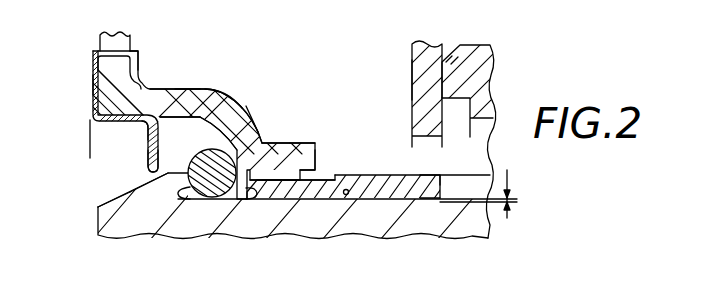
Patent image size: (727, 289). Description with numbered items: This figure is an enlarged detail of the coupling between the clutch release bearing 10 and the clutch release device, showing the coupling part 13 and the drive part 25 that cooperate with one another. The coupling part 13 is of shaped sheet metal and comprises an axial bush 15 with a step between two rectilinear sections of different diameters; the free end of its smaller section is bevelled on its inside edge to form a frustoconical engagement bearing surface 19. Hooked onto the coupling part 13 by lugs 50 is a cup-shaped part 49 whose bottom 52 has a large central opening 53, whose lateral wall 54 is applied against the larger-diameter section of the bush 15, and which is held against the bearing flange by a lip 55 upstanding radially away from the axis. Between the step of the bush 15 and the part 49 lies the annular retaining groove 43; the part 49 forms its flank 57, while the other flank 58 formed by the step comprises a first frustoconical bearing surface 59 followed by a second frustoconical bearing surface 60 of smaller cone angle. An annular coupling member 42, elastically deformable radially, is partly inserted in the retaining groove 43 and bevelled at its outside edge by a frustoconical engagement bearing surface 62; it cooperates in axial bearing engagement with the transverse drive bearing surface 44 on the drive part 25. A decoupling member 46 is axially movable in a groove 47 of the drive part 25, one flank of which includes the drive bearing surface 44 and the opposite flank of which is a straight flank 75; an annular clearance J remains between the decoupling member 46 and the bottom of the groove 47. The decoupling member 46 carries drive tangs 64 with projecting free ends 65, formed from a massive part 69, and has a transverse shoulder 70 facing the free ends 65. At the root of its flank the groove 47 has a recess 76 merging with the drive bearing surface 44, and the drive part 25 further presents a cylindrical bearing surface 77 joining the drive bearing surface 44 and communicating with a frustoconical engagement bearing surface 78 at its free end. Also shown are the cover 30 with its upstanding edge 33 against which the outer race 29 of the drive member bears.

The clutch release bearing 10 is at (518, 49).
The coupling part 13 is at (90, 35).
The bush 15 is at (234, 86).
The frustoconical engagement bearing surface 19 is at (324, 161).
The drive part 25 is at (490, 230).
The outer race 29 is at (473, 52).
The cover 30 is at (405, 46).
The upstanding edge 33 is at (418, 77).
The annular coupling member 42 is at (201, 202).
The annular retaining groove 43 is at (186, 122).
The drive bearing surface 44 is at (197, 163).
The decoupling member 46 is at (389, 170).
The groove 47 is at (350, 199).
The part 49 is at (84, 107).
The lugs 50 is at (137, 51).
The bottom 52 is at (147, 144).
The central opening 53 is at (151, 170).
The lateral wall 54 is at (107, 129).
The lip 55 is at (92, 86).
The flank 57 is at (181, 117).
The flank 58 is at (228, 91).
The first frustoconical bearing surface 59 is at (213, 124).
The second frustoconical bearing surface 60 is at (251, 140).
The frustoconical engagement bearing surface 62 is at (283, 152).
The drive tangs 64 is at (284, 200).
The free end 65 is at (299, 152).
The massive part 69 is at (430, 176).
The transverse shoulder 70 is at (336, 176).
The straight flank 75 is at (428, 202).
The recess 76 is at (178, 201).
The cylindrical bearing surface 77 is at (170, 175).
The frustoconical engagement bearing surface 78 is at (98, 207).
The annular clearance J is at (504, 185).